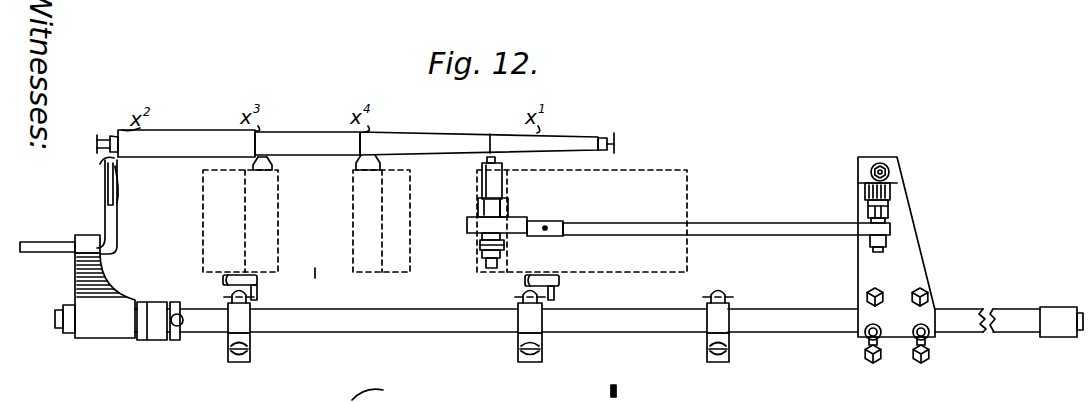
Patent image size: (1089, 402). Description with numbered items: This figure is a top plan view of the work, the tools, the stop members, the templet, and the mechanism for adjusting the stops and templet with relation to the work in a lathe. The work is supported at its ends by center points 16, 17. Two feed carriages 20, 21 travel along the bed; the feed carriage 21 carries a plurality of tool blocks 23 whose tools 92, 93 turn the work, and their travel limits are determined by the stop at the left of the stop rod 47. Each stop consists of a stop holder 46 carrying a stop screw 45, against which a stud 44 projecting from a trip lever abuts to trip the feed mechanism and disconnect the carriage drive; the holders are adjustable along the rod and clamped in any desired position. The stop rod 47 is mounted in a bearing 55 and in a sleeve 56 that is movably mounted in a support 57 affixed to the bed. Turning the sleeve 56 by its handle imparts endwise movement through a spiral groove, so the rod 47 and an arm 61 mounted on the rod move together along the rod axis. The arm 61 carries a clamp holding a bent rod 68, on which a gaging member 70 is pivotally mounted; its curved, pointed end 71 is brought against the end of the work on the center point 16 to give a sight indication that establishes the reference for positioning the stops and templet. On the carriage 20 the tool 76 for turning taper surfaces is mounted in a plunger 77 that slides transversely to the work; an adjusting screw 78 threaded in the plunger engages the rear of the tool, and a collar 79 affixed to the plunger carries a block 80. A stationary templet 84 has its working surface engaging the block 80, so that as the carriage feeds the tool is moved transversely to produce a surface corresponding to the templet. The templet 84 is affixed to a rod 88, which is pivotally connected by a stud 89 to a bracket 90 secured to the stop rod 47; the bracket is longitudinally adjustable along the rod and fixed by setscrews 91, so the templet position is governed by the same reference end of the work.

The center point 16 is at (112, 138).
The center point 17 is at (611, 136).
The feed carriage 20 is at (690, 274).
The feed carriage 21 is at (318, 285).
The tool blocks 23 is at (250, 219).
The stud 44 is at (259, 292).
The stop screw 45 is at (230, 297).
The stop holder 46 is at (243, 332).
The stop rod 47 is at (648, 328).
The bearing 55 is at (1056, 312).
The sleeve 56 is at (176, 340).
The support 57 is at (157, 336).
The arm 61 is at (75, 282).
The bent rod 68 is at (108, 225).
The gaging member 70 is at (108, 189).
The point 71 is at (385, 390).
The tool 76 is at (490, 156).
The plunger 77 is at (482, 180).
The adjusting screw 78 is at (482, 253).
The collar 79 is at (510, 205).
The block 80 is at (486, 208).
The templet 84 is at (536, 223).
The rod 88 is at (753, 228).
The stud 89 is at (870, 243).
The bracket 90 is at (920, 257).
The setscrews 91 is at (864, 353).
The tool 92 is at (262, 162).
The tool 93 is at (368, 160).